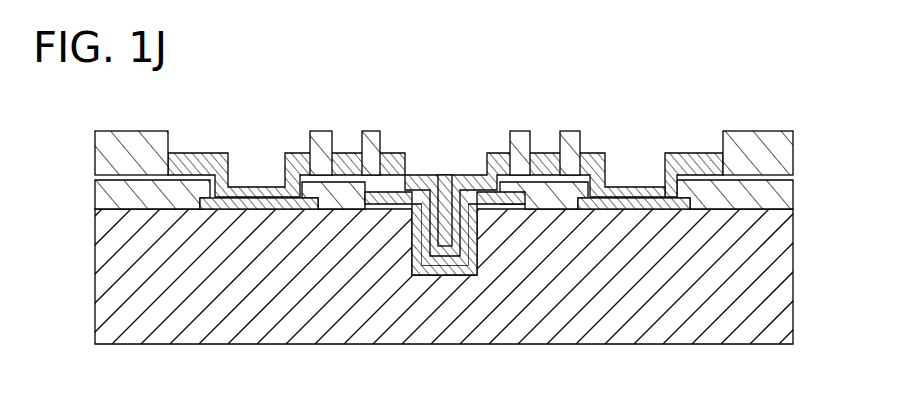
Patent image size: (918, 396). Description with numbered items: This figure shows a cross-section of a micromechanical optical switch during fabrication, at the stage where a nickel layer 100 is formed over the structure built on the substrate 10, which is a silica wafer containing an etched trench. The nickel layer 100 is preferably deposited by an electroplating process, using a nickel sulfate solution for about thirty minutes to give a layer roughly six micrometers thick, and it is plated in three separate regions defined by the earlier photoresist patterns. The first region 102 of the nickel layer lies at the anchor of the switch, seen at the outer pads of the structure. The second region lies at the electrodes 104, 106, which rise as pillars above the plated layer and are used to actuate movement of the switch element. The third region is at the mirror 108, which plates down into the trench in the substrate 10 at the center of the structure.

The substrate 10 is at (793, 290).
The nickel layer 100 is at (668, 118).
The first region 102 is at (212, 153).
The electrode 104 is at (340, 153).
The electrode 106 is at (541, 153).
The mirror 108 is at (492, 153).